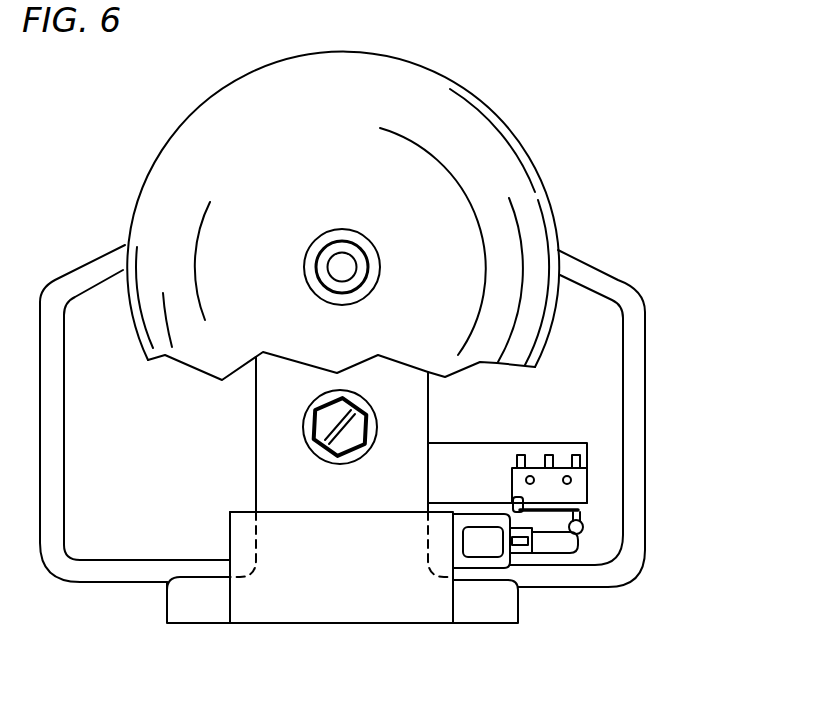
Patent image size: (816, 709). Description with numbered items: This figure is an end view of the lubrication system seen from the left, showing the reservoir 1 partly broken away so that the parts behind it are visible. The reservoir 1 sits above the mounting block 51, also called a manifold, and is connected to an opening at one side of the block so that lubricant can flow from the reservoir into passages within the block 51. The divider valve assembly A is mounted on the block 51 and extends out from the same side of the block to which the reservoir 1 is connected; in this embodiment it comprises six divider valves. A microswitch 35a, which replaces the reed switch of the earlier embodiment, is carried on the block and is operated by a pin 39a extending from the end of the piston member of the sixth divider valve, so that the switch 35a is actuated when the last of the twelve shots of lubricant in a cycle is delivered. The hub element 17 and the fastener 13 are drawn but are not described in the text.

The reservoir 1 is at (469, 113).
The wheel hub 17 is at (343, 267).
The mounting block 51 is at (613, 337).
The divider valve assembly A is at (256, 417).
The hex bolt 13 is at (335, 458).
The microswitch 35a is at (587, 478).
The pin 39a is at (567, 548).